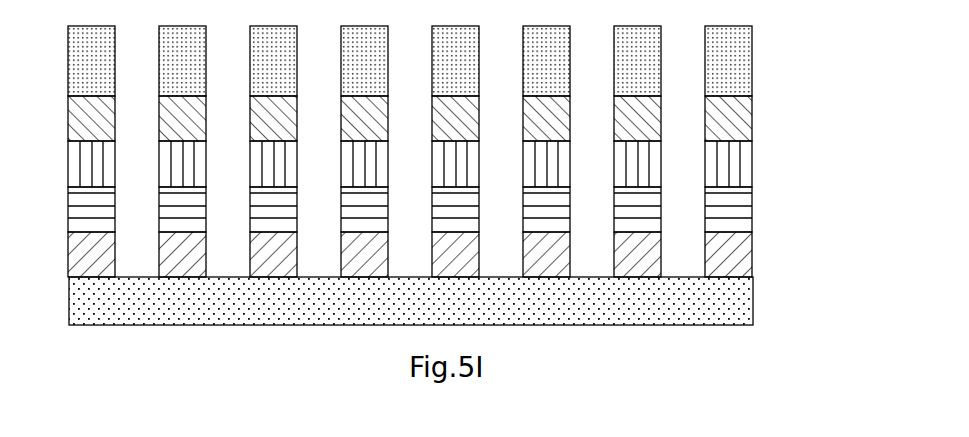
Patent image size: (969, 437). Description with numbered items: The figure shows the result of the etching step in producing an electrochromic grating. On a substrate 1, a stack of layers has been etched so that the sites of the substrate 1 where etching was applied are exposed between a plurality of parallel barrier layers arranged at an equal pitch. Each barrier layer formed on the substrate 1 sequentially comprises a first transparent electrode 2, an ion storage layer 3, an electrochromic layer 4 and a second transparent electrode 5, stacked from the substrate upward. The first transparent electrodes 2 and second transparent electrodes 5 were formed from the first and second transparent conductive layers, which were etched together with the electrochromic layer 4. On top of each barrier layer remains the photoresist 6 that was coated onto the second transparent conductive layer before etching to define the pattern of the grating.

The substrate 1 is at (740, 310).
The first transparent electrode 2 is at (738, 265).
The ion storage layer 3 is at (738, 220).
The electrochromic layer 4 is at (738, 173).
The second transparent electrode 5 is at (737, 128).
The photoresist 6 is at (737, 63).